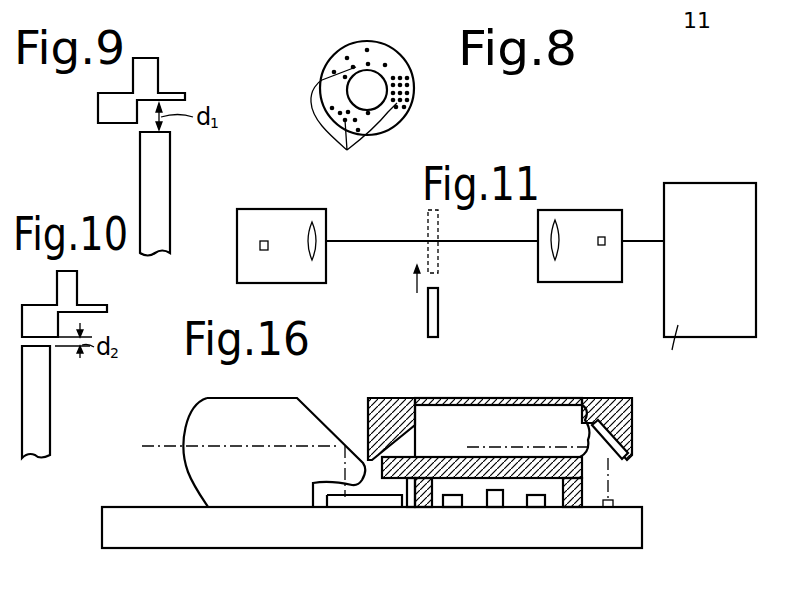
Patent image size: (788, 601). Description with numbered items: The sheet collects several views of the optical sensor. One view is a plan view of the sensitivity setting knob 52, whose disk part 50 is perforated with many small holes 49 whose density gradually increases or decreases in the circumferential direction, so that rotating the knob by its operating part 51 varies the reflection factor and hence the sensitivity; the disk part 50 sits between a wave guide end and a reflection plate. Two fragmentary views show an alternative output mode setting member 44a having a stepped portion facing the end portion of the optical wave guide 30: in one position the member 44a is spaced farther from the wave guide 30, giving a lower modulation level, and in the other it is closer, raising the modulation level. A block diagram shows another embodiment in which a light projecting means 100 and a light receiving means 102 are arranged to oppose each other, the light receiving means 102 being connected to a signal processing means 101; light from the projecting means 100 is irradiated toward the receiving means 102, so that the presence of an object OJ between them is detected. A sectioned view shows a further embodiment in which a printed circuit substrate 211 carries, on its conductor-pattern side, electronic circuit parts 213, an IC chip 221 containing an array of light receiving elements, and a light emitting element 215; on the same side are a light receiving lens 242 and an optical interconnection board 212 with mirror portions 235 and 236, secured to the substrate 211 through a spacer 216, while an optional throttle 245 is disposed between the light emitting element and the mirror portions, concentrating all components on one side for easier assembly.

In FIG. 9, the output mode setting member 44a is at (160, 77).
In FIG. 10, the output mode setting member 44a is at (77, 293).
In FIG. 9, the optical wave guide 30 is at (168, 172).
In FIG. 10, the optical wave guide 30 is at (48, 418).
In FIG. 8, the small holes 49 is at (360, 113).
In FIG. 8, the disk part 50 is at (395, 70).
In FIG. 8, the operating part 51 is at (377, 80).
In FIG. 8, the sensitivity setting knob 52 is at (413, 106).
In FIG. 11, the light projecting means 100 is at (281, 217).
In FIG. 11, the signal processing means 101 is at (704, 186).
In FIG. 11, the light receiving means 102 is at (568, 213).
In FIG. 11, the object OJ is at (438, 318).
In FIG. 16, the printed circuit substrate 211 is at (466, 528).
In FIG. 16, the optical interconnection board 212 is at (492, 418).
In FIG. 16, the electronic circuit parts 213 is at (533, 503).
In FIG. 16, the light emitting element 215 is at (615, 502).
In FIG. 16, the spacer 216 is at (633, 413).
In FIG. 16, the IC chip 221 is at (373, 503).
In FIG. 16, the mirror portion 235 is at (412, 428).
In FIG. 16, the mirror portion 236 is at (617, 459).
In FIG. 16, the light receiving lens 242 is at (244, 407).
In FIG. 16, the throttle 245 is at (413, 481).